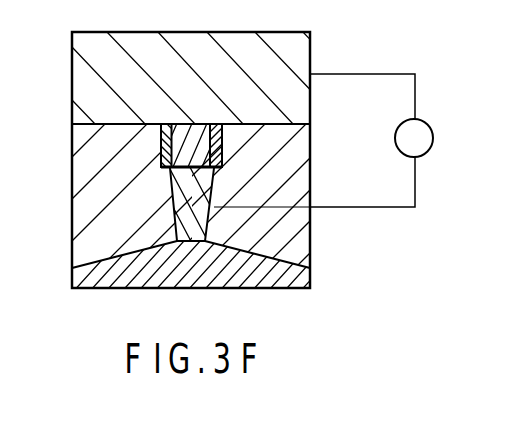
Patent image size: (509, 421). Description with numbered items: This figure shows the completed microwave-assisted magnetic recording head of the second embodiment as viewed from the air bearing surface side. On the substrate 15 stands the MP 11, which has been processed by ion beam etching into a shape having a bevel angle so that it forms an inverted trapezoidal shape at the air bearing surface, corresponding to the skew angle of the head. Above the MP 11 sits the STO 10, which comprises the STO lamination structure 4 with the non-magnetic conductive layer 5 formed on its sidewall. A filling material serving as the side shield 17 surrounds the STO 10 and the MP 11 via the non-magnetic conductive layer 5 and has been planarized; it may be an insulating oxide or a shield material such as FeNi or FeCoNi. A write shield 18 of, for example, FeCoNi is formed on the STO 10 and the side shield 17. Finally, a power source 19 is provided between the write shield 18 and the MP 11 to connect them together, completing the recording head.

The write shield 18 is at (72, 72).
The side shield 17 is at (300, 178).
The substrate 15 is at (310, 274).
The MP 11 is at (193, 207).
The STO 10 is at (120, 148).
The non-magnetic conductive layer 5 is at (165, 128).
The STO lamination structure 4 is at (190, 152).
The power source 19 is at (430, 123).